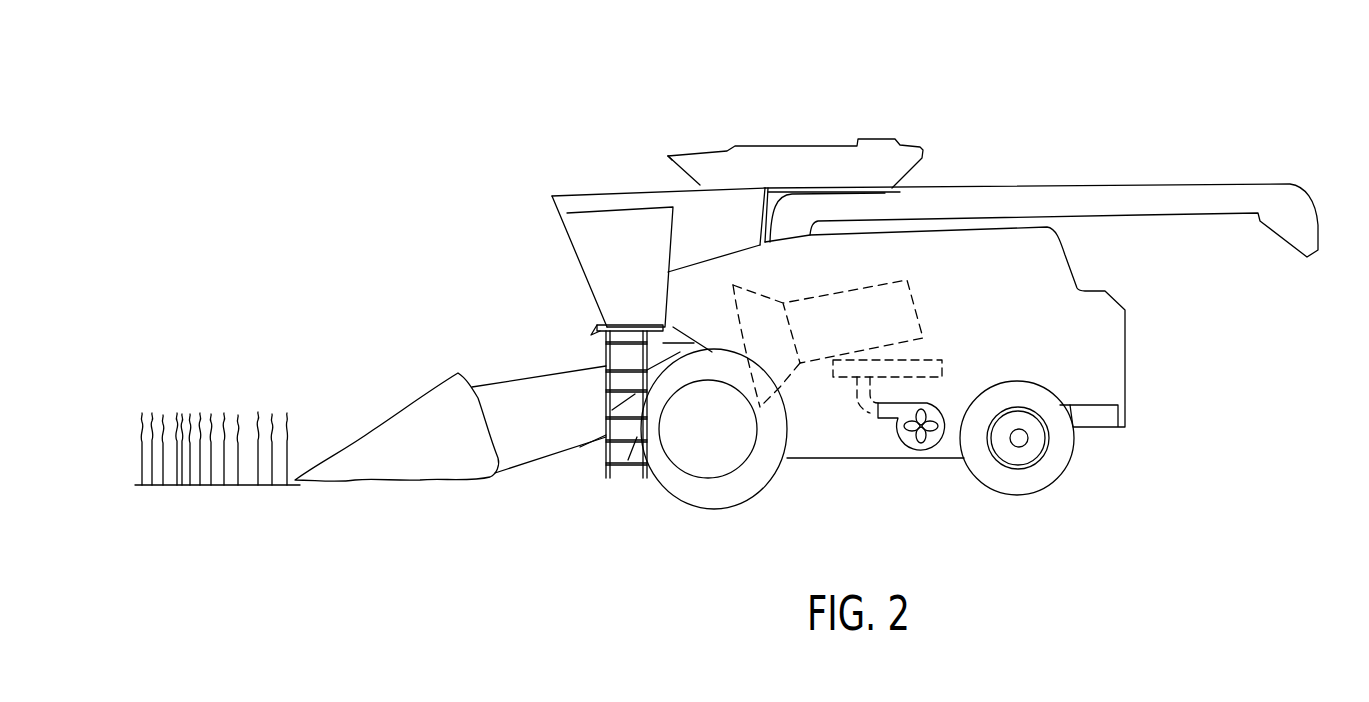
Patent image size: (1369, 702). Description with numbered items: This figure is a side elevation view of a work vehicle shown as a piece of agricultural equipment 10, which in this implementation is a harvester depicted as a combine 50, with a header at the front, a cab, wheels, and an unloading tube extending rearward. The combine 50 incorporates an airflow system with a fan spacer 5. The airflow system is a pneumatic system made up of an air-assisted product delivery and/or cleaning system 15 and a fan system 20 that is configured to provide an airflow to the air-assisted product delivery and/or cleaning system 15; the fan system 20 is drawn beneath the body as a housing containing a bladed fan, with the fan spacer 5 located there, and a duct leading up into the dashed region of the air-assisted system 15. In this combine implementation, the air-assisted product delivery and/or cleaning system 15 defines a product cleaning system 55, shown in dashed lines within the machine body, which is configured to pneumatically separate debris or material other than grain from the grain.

The agricultural equipment 10 is at (856, 62).
The combine 50 is at (613, 150).
The product cleaning system 55 is at (892, 350).
The air-assisted product delivery and/or cleaning system 15 is at (933, 343).
The fan system 20 is at (884, 430).
The fan spacer 5 is at (913, 465).